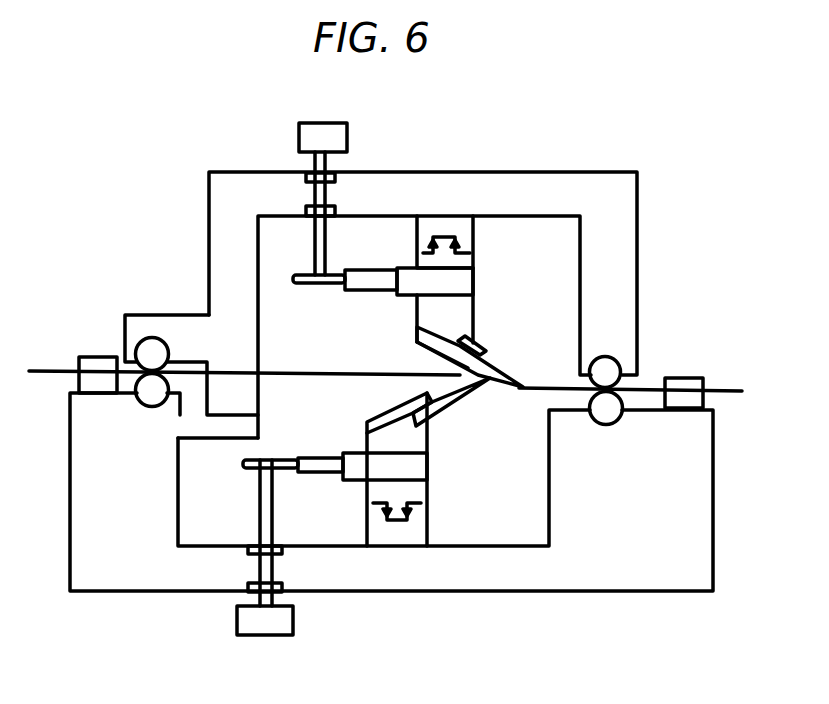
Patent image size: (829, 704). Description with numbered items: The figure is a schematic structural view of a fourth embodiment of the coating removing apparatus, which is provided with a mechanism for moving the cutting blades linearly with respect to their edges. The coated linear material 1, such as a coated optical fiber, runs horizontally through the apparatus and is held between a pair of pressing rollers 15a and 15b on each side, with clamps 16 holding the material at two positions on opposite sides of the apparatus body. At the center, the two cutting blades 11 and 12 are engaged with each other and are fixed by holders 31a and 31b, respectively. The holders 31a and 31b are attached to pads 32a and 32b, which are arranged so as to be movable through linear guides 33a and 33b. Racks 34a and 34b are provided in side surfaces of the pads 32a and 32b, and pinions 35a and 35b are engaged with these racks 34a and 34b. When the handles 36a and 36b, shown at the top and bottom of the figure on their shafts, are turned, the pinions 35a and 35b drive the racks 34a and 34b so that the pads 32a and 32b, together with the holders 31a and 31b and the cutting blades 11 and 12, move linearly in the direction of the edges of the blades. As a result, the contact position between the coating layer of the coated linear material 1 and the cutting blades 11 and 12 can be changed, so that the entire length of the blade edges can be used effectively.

The coated linear material 1 is at (729, 376).
The cutting blade 11 is at (492, 358).
The cutting blade 12 is at (440, 408).
The pressing roller 15a is at (153, 341).
The pressing roller 15b is at (145, 398).
The clamp 16 is at (100, 362).
The holder 31a is at (462, 324).
The holder 31b is at (418, 439).
The pad 32a is at (406, 292).
The pad 32b is at (358, 452).
The linear guide 33a is at (450, 225).
The linear guide 33b is at (420, 518).
The rack 34a is at (381, 270).
The rack 34b is at (317, 469).
The pinion 35a is at (297, 277).
The pinion 35b is at (243, 463).
The handle 36a is at (320, 127).
The handle 36b is at (285, 630).